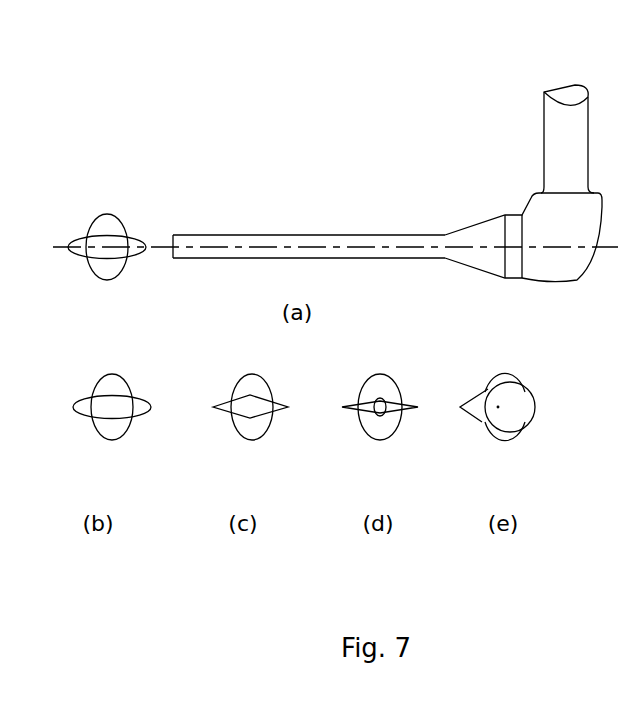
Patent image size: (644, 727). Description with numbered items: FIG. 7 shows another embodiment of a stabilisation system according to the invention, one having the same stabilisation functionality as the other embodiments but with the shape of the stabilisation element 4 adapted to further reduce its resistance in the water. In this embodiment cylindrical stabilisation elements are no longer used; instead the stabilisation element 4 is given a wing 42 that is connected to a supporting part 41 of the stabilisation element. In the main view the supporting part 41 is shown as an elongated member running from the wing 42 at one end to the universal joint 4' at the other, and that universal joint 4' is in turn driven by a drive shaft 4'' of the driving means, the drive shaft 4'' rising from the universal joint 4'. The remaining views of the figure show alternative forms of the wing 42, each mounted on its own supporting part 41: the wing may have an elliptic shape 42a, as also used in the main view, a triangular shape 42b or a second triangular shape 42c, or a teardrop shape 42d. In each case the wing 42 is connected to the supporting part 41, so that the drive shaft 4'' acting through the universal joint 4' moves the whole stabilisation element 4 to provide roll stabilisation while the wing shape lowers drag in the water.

The stabilisation element 4 is at (309, 201).
The universal joint 4' is at (544, 256).
The drive shaft 4'' is at (537, 125).
The supporting part 41 is at (105, 223).
The wing 42 is at (128, 233).
The elliptic wing shape 42a is at (97, 407).
The triangular wing shape 42b is at (247, 407).
The triangular wing shape 42c is at (370, 407).
The teardrop wing shape 42d is at (495, 408).